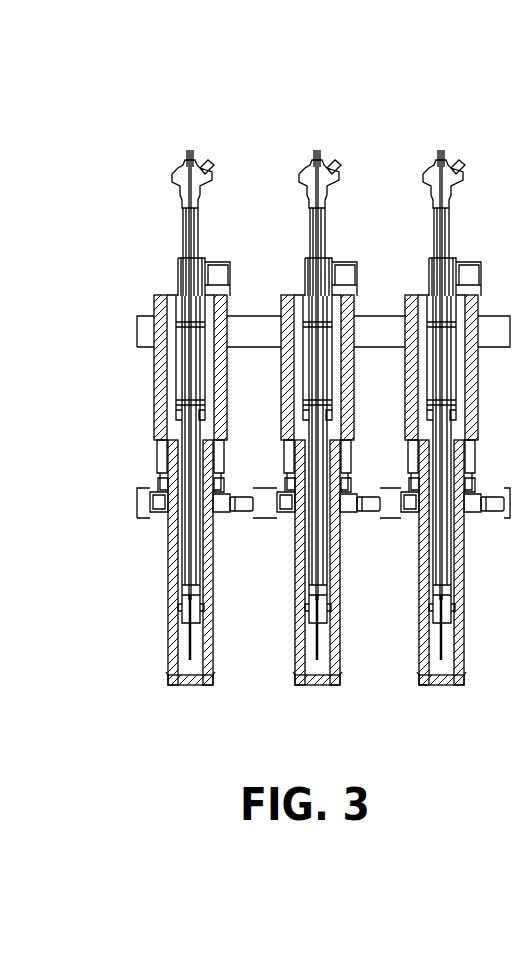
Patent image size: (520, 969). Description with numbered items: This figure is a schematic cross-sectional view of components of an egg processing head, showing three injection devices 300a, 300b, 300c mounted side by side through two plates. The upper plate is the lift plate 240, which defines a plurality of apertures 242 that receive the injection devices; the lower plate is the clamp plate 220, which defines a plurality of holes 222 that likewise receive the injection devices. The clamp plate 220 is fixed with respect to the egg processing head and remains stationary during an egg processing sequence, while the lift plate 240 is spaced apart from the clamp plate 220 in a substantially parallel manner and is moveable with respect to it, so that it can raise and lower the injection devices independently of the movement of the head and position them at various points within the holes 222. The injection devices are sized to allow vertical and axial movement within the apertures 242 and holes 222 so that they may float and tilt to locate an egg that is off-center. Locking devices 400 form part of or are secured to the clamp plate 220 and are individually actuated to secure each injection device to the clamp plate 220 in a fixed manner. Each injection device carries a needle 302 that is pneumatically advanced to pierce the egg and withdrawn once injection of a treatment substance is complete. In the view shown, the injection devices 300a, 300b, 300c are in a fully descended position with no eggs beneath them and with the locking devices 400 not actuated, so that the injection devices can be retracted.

The lift plate 240 is at (256, 332).
The apertures 242 is at (153, 325).
The clamp plate 220 is at (261, 497).
The holes 222 is at (149, 487).
The locking devices 400 is at (152, 513).
The injection device 300a is at (173, 417).
The injection device 300b is at (302, 632).
The injection device 300c is at (423, 635).
The needle 302 is at (190, 643).